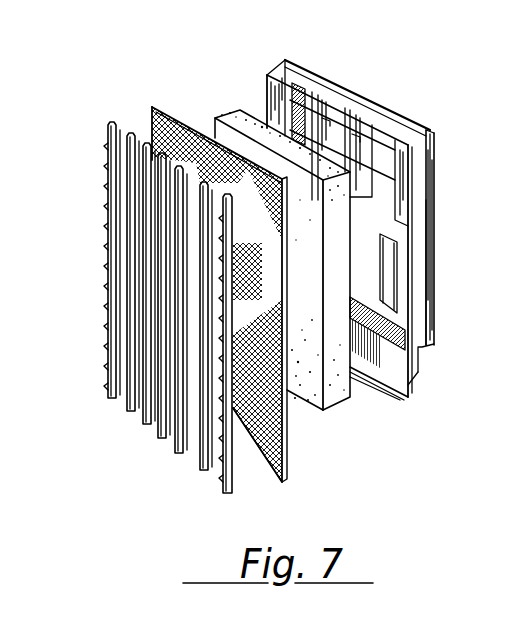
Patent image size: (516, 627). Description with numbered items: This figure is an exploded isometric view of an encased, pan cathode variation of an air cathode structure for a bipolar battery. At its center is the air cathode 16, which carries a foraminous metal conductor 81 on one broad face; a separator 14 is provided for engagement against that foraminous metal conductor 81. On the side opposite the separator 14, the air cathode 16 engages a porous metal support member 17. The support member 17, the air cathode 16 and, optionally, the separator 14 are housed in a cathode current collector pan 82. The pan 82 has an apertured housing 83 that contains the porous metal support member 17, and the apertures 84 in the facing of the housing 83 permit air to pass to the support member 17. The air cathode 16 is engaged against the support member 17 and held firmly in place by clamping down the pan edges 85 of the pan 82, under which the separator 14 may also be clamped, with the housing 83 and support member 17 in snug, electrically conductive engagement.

The separator 14 is at (222, 487).
The air cathode 16 is at (285, 443).
The porous metal support member 17 is at (273, 146).
The foraminous metal conductor 81 is at (268, 455).
The cathode current collector pan 82 is at (375, 92).
The apertured housing 83 is at (433, 338).
The apertures 84 is at (298, 117).
The pan edges 85 is at (405, 399).